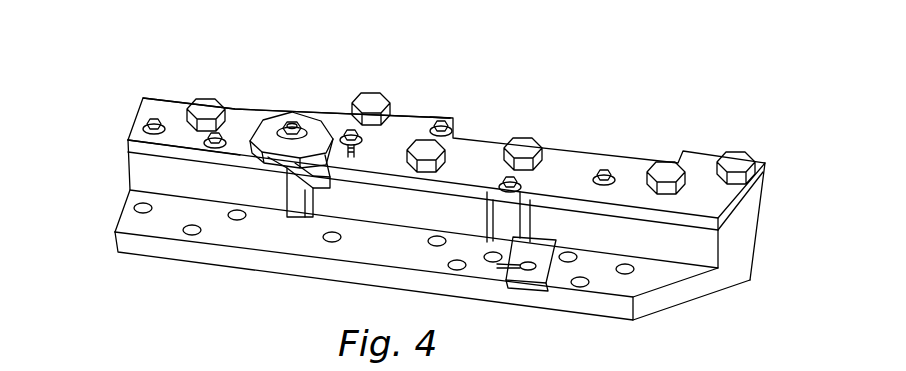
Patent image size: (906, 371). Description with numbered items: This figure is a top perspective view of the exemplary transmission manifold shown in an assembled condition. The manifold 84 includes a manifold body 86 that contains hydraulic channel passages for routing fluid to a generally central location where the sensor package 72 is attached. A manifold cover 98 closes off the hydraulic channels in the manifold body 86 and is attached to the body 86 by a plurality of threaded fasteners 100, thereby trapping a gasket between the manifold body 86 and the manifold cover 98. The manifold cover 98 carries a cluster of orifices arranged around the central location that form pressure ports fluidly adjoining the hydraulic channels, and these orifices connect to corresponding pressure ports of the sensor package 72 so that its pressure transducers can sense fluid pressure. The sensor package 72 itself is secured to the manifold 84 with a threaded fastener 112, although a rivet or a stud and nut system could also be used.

The sensor package 72 is at (313, 121).
The manifold 84 is at (115, 93).
The manifold body 86 is at (277, 262).
The manifold cover 98 is at (243, 112).
The threaded fasteners 100 is at (442, 121).
The threaded fastener 112 is at (292, 122).